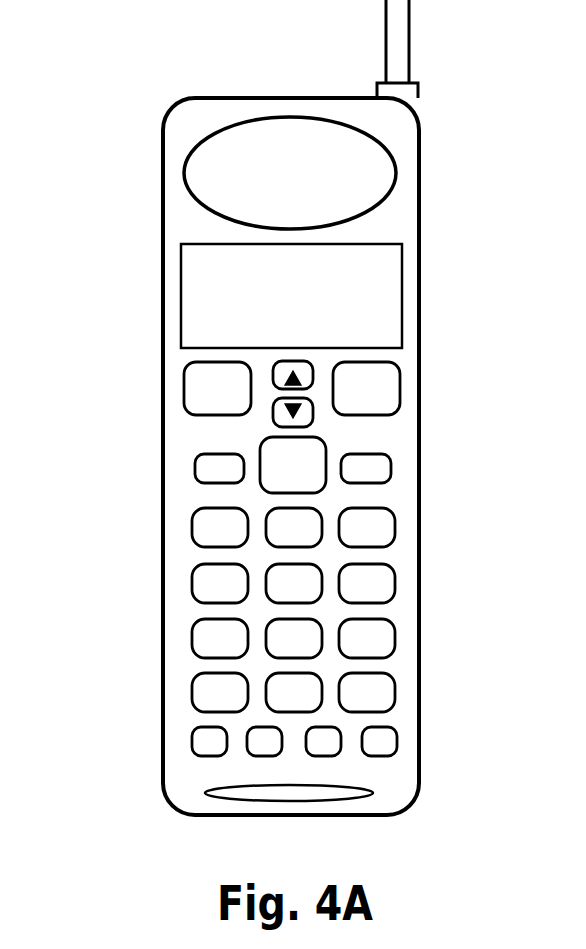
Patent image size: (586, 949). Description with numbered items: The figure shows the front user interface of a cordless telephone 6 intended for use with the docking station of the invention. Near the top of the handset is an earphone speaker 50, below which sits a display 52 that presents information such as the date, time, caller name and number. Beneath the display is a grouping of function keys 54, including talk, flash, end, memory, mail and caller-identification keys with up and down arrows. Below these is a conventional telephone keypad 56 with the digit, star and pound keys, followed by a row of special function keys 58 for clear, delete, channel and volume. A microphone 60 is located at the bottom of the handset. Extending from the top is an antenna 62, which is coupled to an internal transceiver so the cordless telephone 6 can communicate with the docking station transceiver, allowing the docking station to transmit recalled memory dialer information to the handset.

The cordless telephone 6 is at (421, 449).
The earphone speaker 50 is at (188, 185).
The display 52 is at (181, 320).
The function keys 54 is at (175, 490).
The telephone keypad 56 is at (185, 713).
The special function keys 58 is at (187, 773).
The microphone 60 is at (220, 797).
The antenna 62 is at (410, 30).